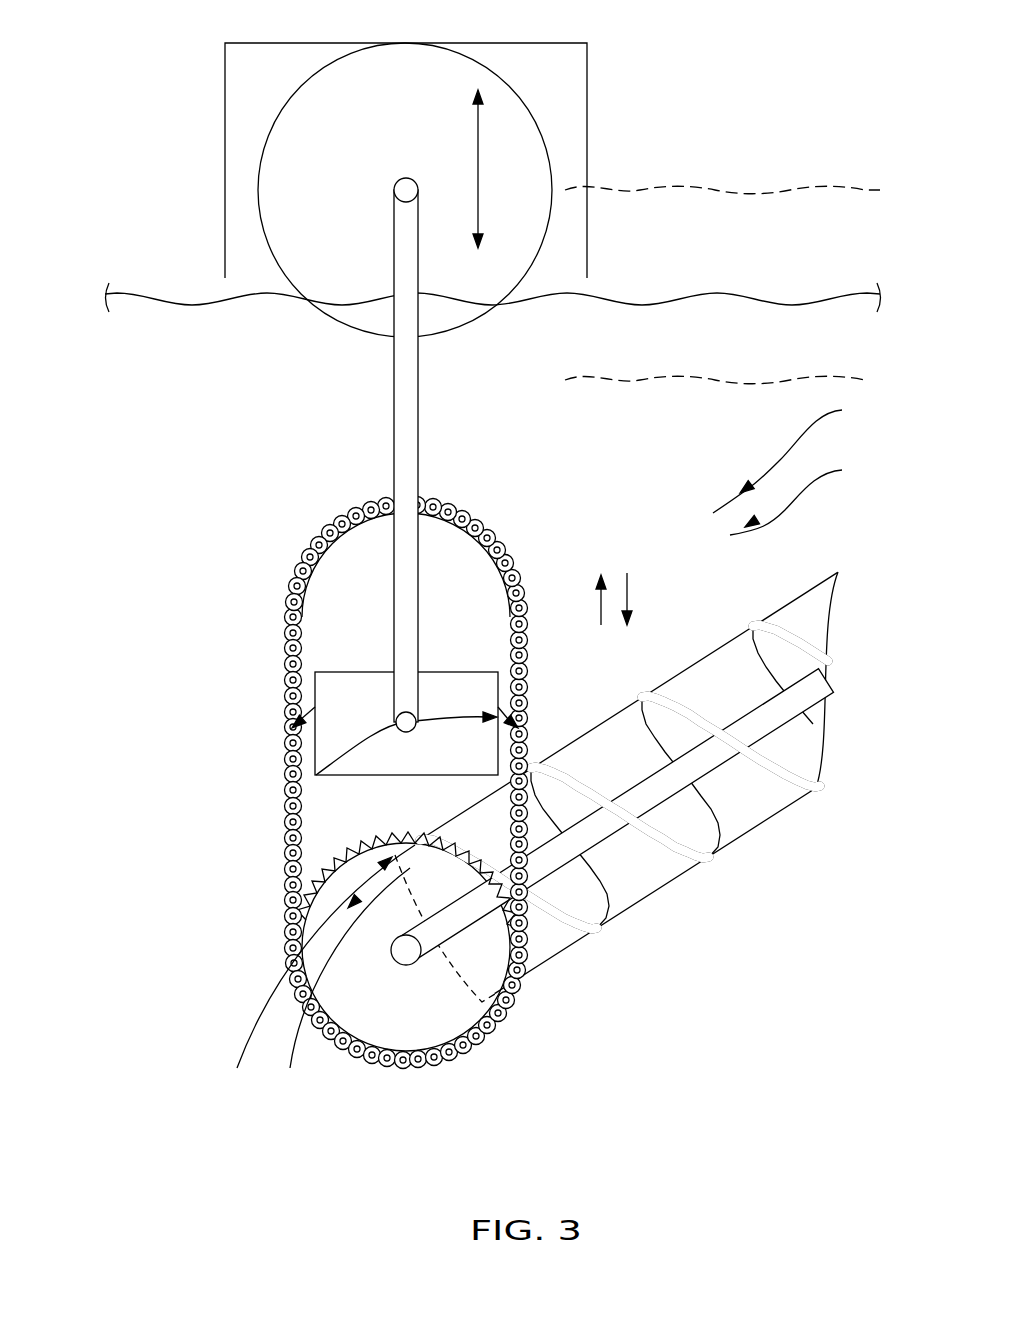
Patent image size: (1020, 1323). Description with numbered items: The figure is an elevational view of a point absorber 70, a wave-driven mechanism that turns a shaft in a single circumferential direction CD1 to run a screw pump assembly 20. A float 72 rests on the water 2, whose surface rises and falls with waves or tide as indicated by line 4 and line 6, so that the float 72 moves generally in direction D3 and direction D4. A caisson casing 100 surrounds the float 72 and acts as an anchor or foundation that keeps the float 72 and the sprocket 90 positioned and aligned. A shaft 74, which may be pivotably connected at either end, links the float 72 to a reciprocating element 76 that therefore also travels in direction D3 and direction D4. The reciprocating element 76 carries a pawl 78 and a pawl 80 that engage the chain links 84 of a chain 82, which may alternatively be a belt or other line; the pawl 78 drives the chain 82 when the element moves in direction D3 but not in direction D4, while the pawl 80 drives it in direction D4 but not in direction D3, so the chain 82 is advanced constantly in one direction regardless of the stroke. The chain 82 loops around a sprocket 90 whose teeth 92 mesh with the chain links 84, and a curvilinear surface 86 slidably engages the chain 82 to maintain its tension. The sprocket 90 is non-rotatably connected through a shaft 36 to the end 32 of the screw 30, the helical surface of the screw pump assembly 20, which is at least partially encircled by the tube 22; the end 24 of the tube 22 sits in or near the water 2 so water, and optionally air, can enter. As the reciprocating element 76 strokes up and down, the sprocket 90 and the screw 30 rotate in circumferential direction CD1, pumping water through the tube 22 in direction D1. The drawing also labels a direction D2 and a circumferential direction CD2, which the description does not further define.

The point absorber 70 is at (92, 78).
The caisson casing 100 is at (225, 88).
The float 72 is at (533, 110).
The shaft 74 is at (393, 368).
The reciprocating element 76 is at (468, 678).
The pawl 78 is at (302, 718).
The pawl 80 is at (316, 776).
The chain 82 is at (308, 552).
The chain links 84 is at (354, 782).
The surface 86 is at (320, 556).
The sprocket 90 is at (370, 782).
The teeth 92 is at (318, 850).
The shaft 36 is at (347, 1043).
The screw 30 is at (700, 880).
The screw pump assembly 20 is at (779, 838).
The tube 22 is at (624, 738).
The end 24 is at (548, 715).
The end 32 is at (546, 972).
The water 2 is at (185, 300).
The line 4 is at (735, 190).
The line 6 is at (740, 378).
The direction D1 is at (796, 454).
The second flow direction D2 is at (805, 496).
The direction D3 is at (601, 625).
The direction D4 is at (627, 590).
The circumferential direction CD1 is at (315, 976).
The second rotation direction CD2 is at (339, 988).